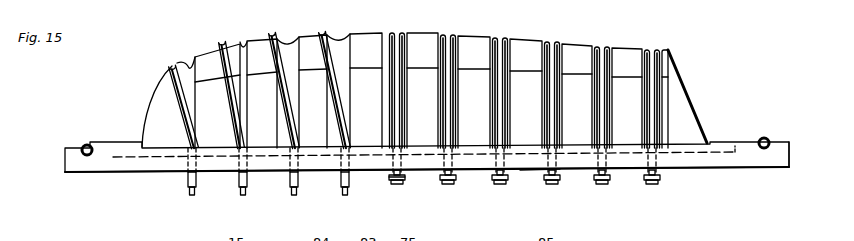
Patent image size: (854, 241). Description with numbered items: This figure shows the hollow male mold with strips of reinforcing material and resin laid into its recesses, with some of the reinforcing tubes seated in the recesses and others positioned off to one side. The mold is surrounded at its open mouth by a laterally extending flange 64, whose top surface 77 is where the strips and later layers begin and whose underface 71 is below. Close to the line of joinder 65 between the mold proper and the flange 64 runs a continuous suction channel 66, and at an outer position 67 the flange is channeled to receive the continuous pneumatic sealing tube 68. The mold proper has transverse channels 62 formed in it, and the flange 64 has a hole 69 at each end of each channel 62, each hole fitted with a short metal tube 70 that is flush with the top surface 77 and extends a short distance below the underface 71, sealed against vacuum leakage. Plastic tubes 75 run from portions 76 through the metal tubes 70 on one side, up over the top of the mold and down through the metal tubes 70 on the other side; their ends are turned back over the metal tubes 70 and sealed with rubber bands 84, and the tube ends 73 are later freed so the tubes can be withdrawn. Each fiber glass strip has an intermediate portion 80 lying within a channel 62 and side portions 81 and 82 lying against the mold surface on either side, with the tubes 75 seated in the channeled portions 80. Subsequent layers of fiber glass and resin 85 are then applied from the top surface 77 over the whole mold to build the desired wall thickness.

The transverse channel 62 is at (242, 50).
The laterally extending flange 64 is at (688, 162).
The line of joinder 65 is at (707, 140).
The suction channel 66 is at (700, 152).
The outer channel position 67 is at (764, 167).
The pneumatic sealing tube 68 is at (770, 137).
The hole 69 is at (185, 162).
The short metal tube 70 is at (287, 178).
The underface 71 is at (527, 170).
The tube end 73 is at (403, 185).
The tube 75 is at (172, 65).
The tube portion 76 is at (237, 193).
The top surface of the flange 77 is at (108, 142).
The intermediate portion 80 is at (392, 53).
The side portion 81 is at (436, 46).
The side portion 82 is at (462, 47).
The rubber band 84 is at (395, 178).
The layers of fiber glass and resin 85 is at (317, 127).